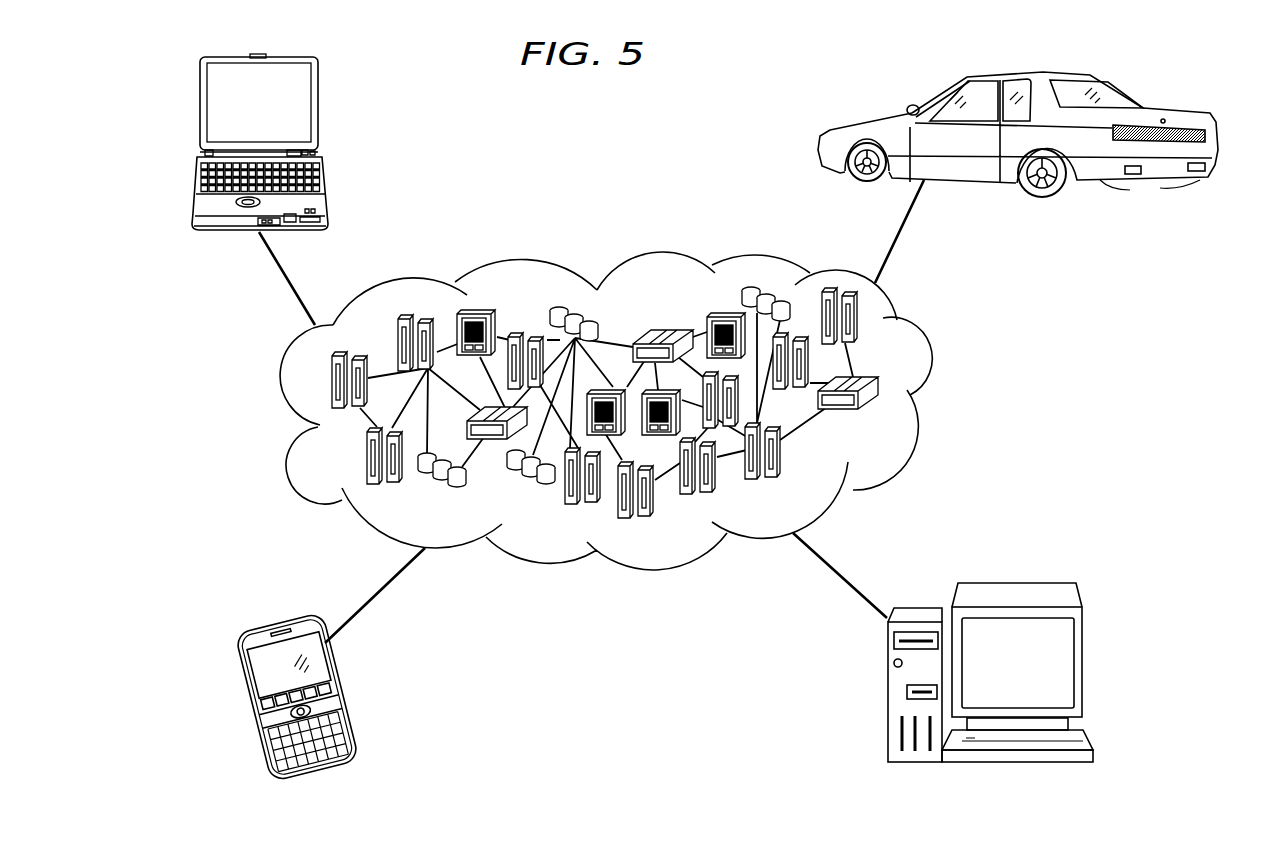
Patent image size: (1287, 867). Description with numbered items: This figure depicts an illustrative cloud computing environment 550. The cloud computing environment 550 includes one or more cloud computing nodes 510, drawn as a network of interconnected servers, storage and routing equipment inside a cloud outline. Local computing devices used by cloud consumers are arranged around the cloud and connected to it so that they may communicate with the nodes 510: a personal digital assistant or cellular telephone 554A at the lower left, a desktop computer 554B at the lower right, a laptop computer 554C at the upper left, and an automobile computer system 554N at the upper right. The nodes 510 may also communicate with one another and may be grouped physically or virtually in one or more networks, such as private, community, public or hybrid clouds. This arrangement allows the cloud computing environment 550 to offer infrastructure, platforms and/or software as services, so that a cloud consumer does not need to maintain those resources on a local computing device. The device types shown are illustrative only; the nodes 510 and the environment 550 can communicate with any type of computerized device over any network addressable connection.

The cloud computing environment 550 is at (925, 333).
The cloud computing nodes 510 is at (883, 415).
The personal digital assistant (PDA) or cellular telephone 554A is at (240, 688).
The desktop computer 554B is at (1018, 583).
The laptop computer 554C is at (198, 98).
The automobile computer system 554N is at (1185, 110).